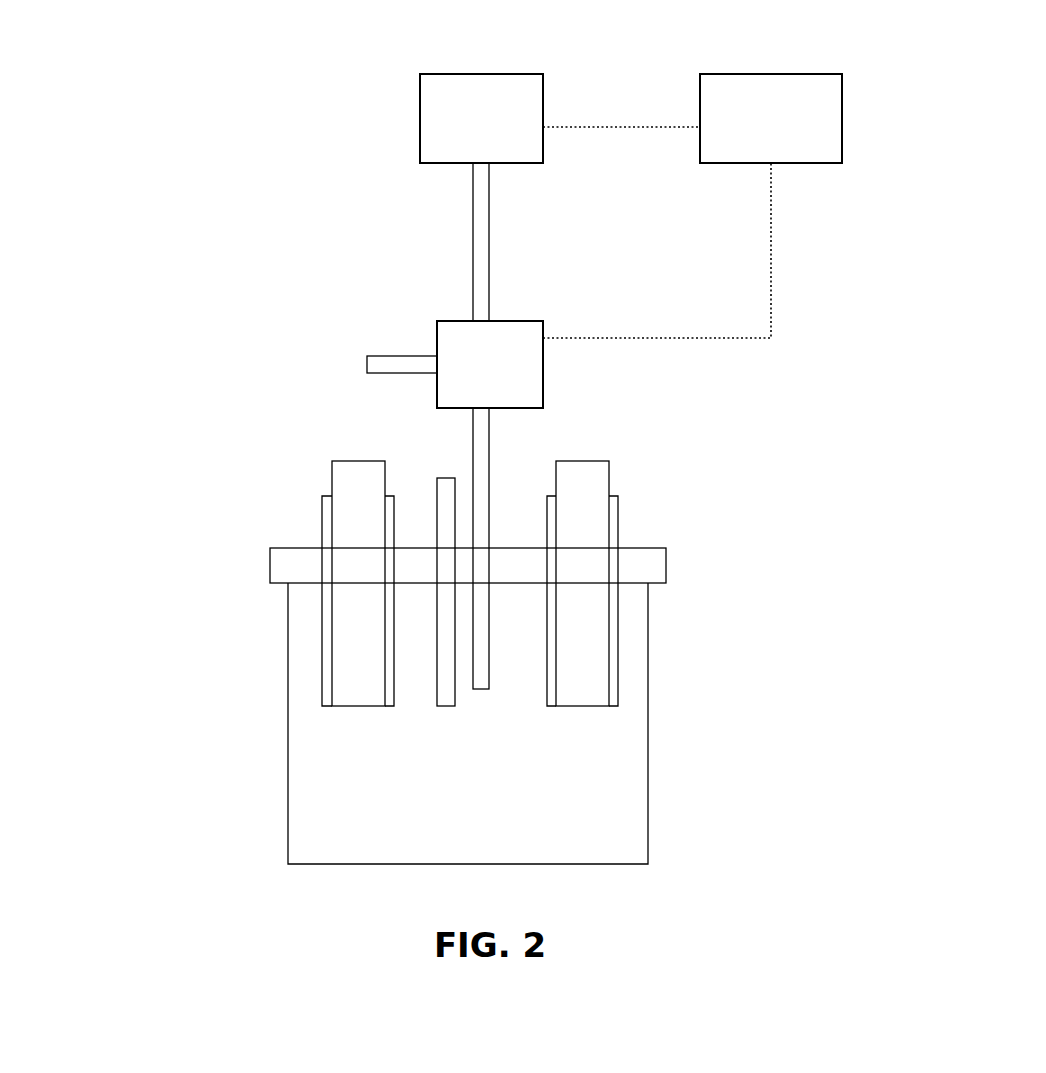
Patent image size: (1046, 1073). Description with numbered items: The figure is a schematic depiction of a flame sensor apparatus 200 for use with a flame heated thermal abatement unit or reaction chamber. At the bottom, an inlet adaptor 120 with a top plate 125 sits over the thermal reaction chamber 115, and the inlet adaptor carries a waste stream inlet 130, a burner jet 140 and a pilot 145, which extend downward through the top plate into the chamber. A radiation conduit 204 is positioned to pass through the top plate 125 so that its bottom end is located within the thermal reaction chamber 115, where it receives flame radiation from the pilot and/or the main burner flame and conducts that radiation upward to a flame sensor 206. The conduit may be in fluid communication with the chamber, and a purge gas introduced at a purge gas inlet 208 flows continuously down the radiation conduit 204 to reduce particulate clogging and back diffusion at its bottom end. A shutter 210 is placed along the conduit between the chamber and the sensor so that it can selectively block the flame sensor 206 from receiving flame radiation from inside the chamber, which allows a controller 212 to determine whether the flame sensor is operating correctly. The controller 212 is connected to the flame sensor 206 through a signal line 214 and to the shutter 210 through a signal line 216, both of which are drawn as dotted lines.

The flame sensor apparatus 200 is at (242, 146).
The flame sensor 206 is at (420, 118).
The controller 212 is at (842, 118).
The signal line 214 is at (597, 127).
The signal line 216 is at (771, 312).
The radiation conduit 204 is at (473, 260).
The shutter 210 is at (497, 320).
The purge gas inlet 208 is at (402, 356).
The inlet adaptor 120 is at (216, 525).
The top plate 125 is at (666, 562).
The thermal reaction chamber 115 is at (492, 820).
The waste stream inlet 130 is at (332, 482).
The burner jet 140 is at (322, 530).
The pilot 145 is at (437, 504).